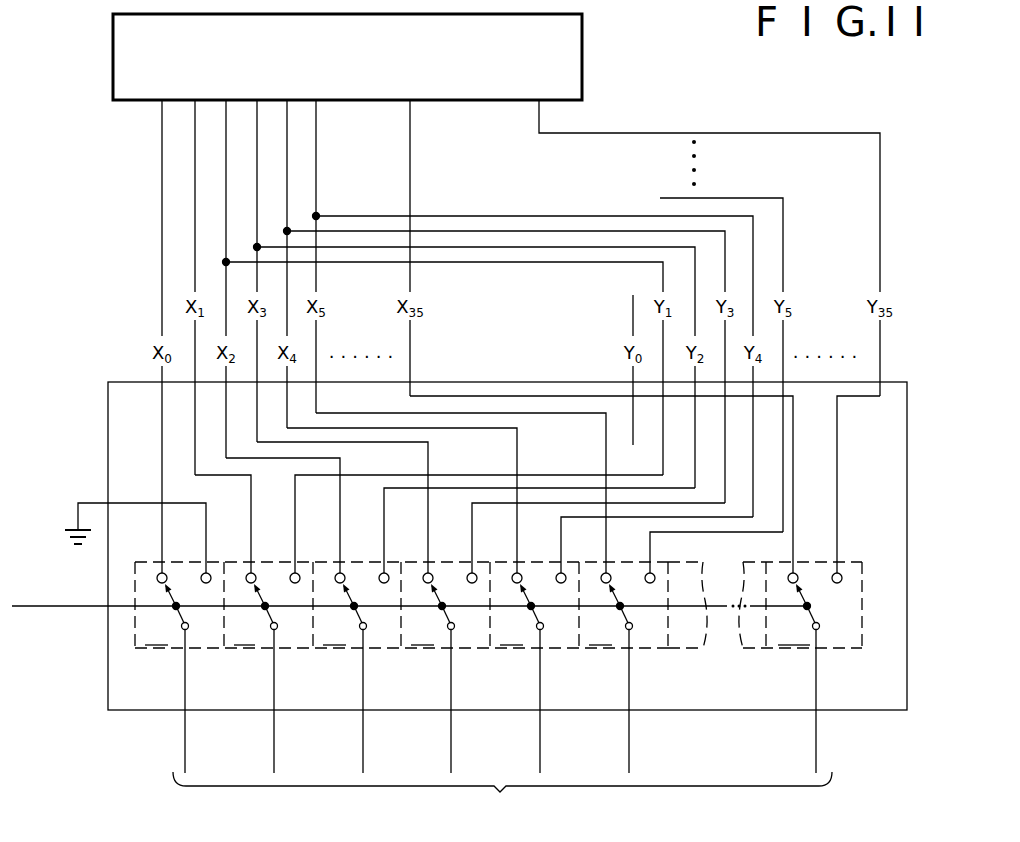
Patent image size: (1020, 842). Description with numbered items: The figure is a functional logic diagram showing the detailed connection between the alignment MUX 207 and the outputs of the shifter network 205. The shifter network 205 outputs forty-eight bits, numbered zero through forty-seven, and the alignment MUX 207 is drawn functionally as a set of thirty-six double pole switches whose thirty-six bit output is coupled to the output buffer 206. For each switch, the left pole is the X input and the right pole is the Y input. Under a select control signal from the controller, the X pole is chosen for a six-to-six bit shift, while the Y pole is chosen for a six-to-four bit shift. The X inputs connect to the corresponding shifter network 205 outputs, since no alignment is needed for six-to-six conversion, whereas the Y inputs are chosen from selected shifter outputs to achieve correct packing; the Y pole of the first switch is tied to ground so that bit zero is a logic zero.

The shifter network 205 is at (582, 52).
The alignment MUX 207 is at (148, 414).
The output buffer 206 is at (502, 794).